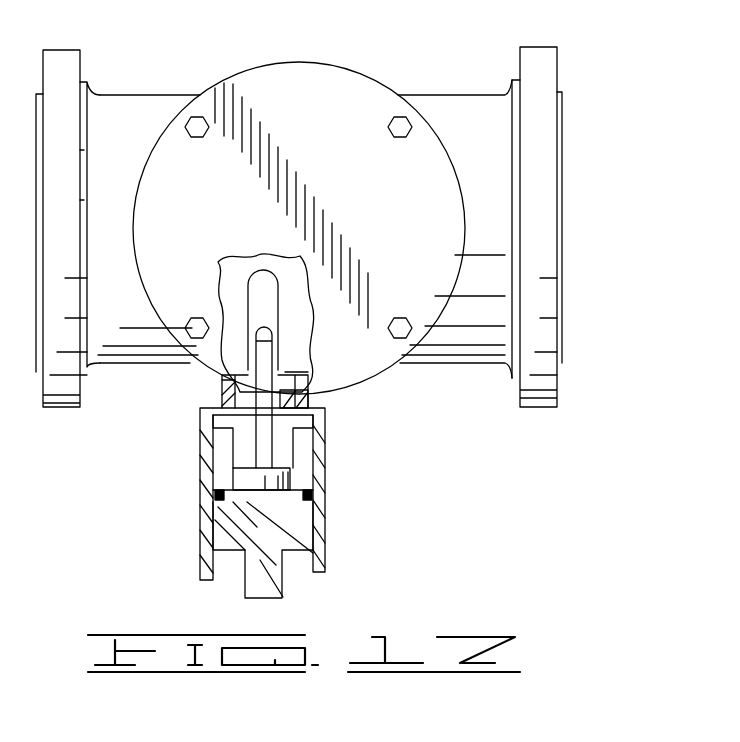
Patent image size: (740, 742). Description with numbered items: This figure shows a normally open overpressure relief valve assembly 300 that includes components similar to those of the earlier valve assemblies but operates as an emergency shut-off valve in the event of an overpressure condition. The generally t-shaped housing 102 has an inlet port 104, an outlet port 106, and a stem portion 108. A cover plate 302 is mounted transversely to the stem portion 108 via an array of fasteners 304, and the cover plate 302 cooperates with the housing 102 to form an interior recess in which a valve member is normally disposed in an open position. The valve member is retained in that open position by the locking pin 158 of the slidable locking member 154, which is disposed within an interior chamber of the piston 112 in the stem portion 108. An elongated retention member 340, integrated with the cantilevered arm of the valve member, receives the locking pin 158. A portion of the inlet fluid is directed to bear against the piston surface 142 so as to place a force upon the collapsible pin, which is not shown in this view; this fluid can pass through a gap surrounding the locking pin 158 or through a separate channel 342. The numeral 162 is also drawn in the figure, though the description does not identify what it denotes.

The valve assembly 300 is at (212, 74).
The cover plate 302 is at (358, 92).
The fasteners 304 is at (398, 138).
The elongated retention member 340 is at (255, 260).
The pin 162 is at (263, 332).
The locking pin 158 is at (272, 365).
The separate channel 342 is at (222, 393).
The piston surface 142 is at (312, 400).
The housing 102 is at (452, 363).
The inlet port 104 is at (36, 372).
The outlet port 106 is at (562, 340).
The locking member 154 is at (250, 448).
The stem portion 108 is at (205, 548).
The piston 112 is at (273, 585).